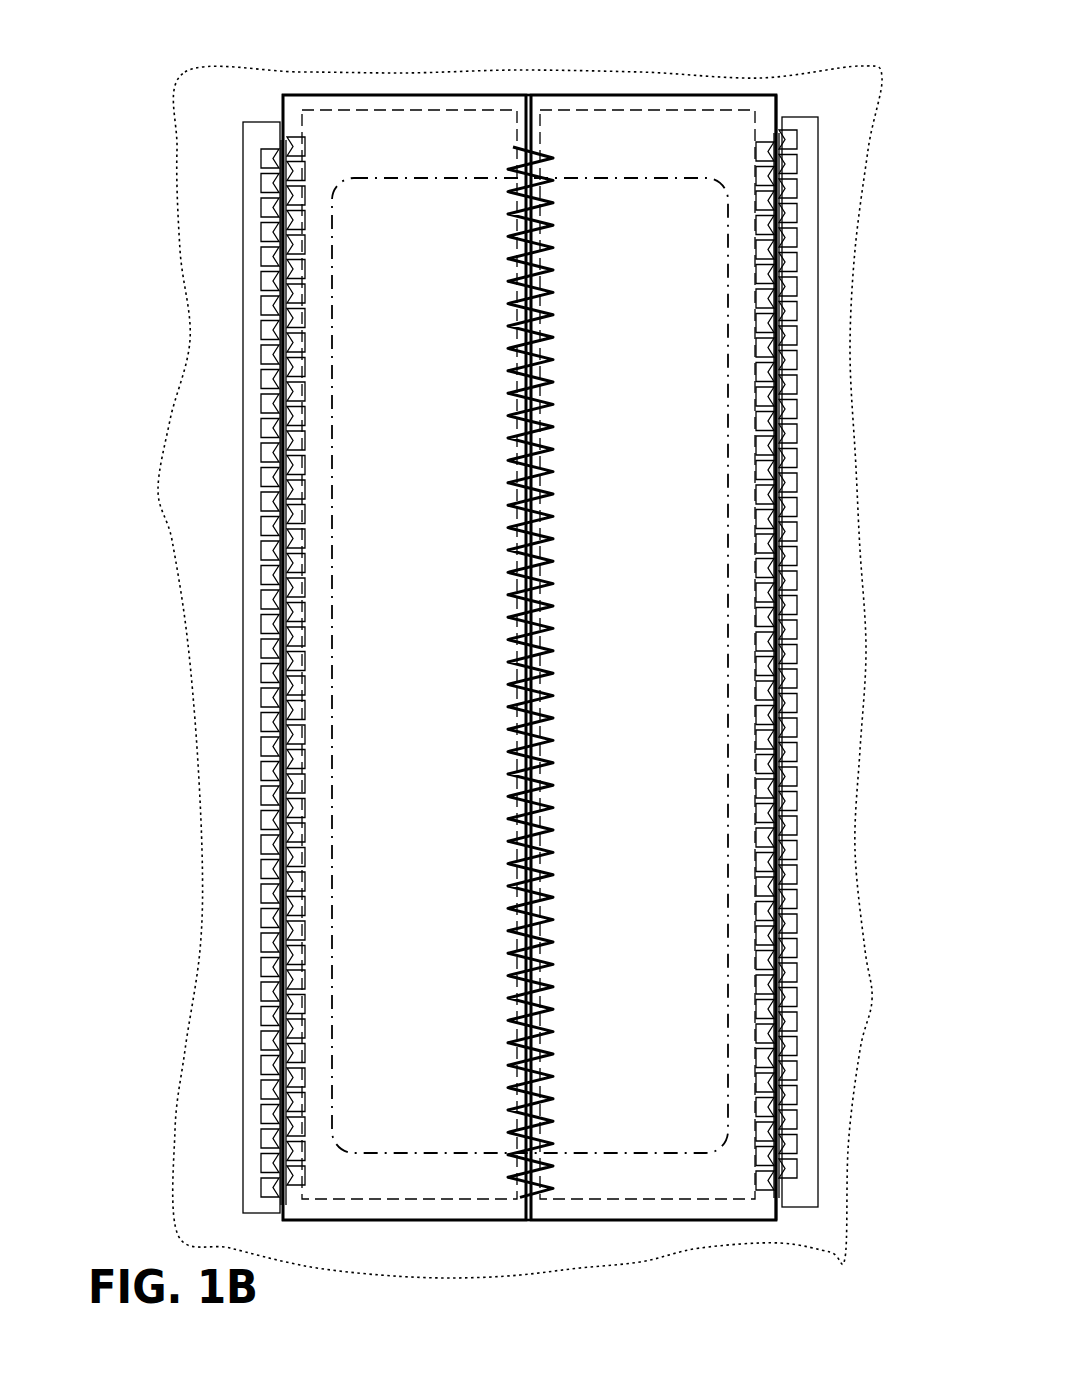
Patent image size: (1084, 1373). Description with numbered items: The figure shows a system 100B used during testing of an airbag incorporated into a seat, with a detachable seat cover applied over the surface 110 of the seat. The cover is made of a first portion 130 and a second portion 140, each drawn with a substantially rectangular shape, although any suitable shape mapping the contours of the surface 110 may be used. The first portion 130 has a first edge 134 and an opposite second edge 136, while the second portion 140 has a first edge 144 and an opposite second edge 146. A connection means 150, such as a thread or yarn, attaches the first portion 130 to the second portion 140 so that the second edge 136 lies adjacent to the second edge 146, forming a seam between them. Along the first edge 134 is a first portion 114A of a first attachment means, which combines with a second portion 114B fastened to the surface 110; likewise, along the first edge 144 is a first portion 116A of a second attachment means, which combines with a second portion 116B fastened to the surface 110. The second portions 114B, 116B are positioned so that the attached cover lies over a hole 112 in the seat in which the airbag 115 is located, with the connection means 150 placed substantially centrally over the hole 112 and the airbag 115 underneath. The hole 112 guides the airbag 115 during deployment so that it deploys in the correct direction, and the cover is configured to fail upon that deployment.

The system 100B is at (140, 25).
The surface of the seat 110 is at (848, 1003).
The hole 112 is at (592, 1200).
The first portion of first attachment means 114A is at (298, 173).
The second portion of first attachment means 114B is at (268, 165).
The airbag 115 is at (705, 1143).
The first portion of second attachment means 116A is at (768, 143).
The second portion of second attachment means 116B is at (795, 243).
The first portion 130 is at (397, 95).
The first edge of the first portion 134 is at (283, 103).
The second edge of the first portion 136 is at (525, 128).
The second portion 140 is at (610, 95).
The first edge of the second portion 144 is at (776, 103).
The second edge of the second portion 146 is at (533, 135).
The connection means 150 is at (513, 1104).